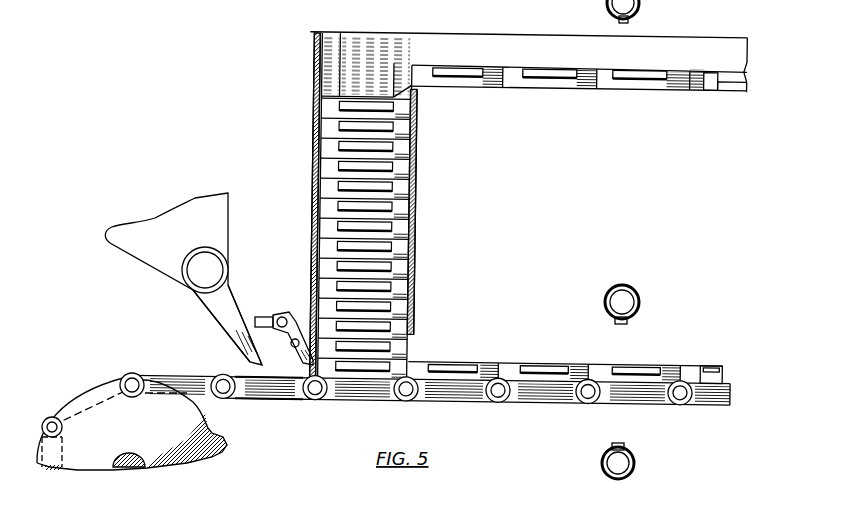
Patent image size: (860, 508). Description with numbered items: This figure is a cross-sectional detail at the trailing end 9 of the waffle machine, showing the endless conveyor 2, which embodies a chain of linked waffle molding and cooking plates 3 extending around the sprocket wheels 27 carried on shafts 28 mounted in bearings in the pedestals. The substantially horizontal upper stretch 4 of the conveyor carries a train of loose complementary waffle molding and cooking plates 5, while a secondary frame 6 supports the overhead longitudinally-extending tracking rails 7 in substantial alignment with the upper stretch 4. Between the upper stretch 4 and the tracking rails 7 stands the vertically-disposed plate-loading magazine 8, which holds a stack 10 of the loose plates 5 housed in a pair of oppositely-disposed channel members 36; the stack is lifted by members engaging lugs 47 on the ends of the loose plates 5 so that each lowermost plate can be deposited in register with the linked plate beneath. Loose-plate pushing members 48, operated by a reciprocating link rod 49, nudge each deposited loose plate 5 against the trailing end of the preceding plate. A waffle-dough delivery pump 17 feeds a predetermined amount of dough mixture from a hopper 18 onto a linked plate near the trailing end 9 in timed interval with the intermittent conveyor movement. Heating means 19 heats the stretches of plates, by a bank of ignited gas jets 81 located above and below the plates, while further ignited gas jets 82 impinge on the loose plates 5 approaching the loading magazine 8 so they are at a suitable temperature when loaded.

The endless conveyor 2 is at (275, 400).
The linked waffle molding and cooking plates 3 is at (700, 396).
The upper stretch 4 is at (294, 400).
The loose complementary waffle molding and cooking plates 5 is at (513, 72).
The secondary frame 6 is at (497, 44).
The tracking rails 7 is at (731, 84).
The plate-loading magazine 8 is at (318, 150).
The trailing end 9 is at (108, 369).
The stack 10 is at (326, 176).
The waffle-dough delivery pump 17 is at (202, 275).
The hopper 18 is at (168, 267).
The heating means 19 is at (607, 307).
The sprocket wheels 27 is at (175, 463).
The shafts 28 is at (140, 467).
The channel members 36 is at (415, 218).
The lugs 47 is at (537, 70).
The loose-plate pushing members 48 is at (299, 314).
The link rod 49 is at (260, 316).
The ignited gas jets 81 is at (618, 321).
The ignited gas jets 82 is at (618, 20).